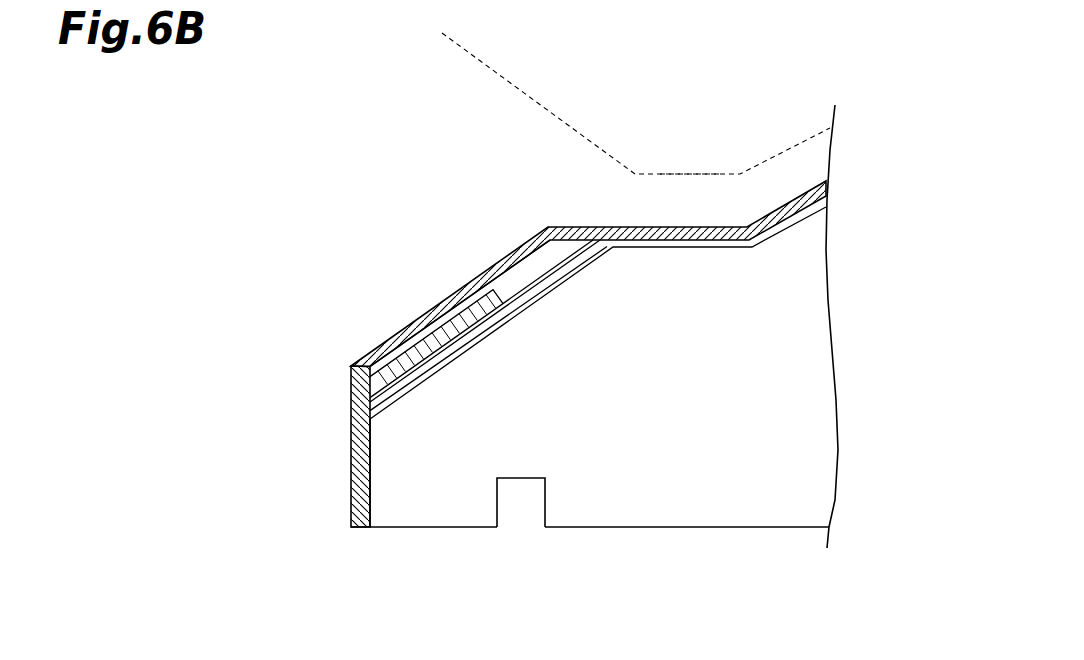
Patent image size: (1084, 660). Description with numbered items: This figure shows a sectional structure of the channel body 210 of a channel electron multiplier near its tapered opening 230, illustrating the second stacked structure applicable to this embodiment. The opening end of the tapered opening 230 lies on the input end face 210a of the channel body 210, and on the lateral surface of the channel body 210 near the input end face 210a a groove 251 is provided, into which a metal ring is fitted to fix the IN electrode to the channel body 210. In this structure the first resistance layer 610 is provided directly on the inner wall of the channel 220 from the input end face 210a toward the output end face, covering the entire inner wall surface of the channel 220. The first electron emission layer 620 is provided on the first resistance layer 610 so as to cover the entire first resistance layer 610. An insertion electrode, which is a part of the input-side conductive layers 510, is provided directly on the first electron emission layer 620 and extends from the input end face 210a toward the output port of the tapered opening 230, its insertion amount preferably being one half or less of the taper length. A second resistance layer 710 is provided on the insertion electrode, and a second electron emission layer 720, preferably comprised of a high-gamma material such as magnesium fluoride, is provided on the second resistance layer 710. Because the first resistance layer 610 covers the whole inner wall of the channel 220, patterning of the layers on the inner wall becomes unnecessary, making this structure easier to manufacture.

The channel body 210 is at (795, 394).
The input end face 210a is at (372, 486).
The channel 220 is at (723, 173).
The tapered opening 230 is at (498, 153).
The groove 251 is at (525, 502).
The input-side conductive layers 510 is at (352, 463).
The first resistance layer 610 is at (534, 304).
The first electron emission layer 620 is at (458, 345).
The second resistance layer 710 is at (525, 273).
The second electron emission layer 720 is at (441, 310).